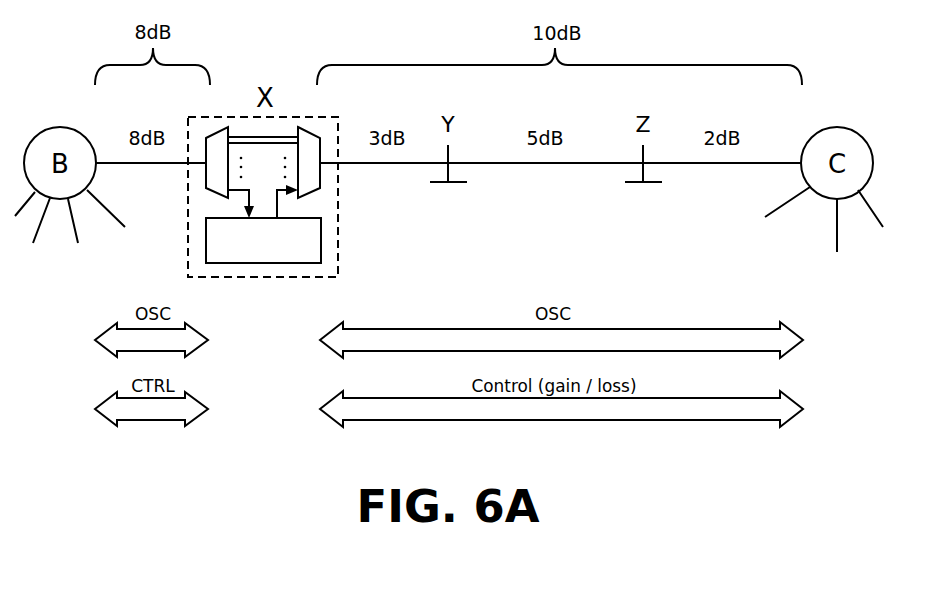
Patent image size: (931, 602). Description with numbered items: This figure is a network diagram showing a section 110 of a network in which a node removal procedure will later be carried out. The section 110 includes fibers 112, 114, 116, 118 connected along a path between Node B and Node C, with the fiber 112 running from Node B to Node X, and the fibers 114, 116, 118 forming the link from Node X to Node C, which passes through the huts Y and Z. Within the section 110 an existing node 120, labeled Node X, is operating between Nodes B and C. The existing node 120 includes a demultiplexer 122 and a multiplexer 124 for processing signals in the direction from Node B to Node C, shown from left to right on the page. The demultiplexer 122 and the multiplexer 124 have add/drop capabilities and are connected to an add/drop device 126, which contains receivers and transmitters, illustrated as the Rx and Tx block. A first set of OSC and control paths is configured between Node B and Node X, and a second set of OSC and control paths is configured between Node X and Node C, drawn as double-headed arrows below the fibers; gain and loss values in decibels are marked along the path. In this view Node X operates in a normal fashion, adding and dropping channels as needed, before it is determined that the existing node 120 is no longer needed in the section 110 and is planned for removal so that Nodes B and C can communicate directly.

The section 110 is at (108, 478).
The fiber 112 is at (153, 163).
The fiber 114 is at (393, 163).
The fiber 116 is at (538, 163).
The fiber 118 is at (698, 163).
The existing node 120 is at (338, 243).
The demultiplexer 122 is at (213, 133).
The multiplexer 124 is at (320, 172).
The add/drop device 126 is at (273, 263).